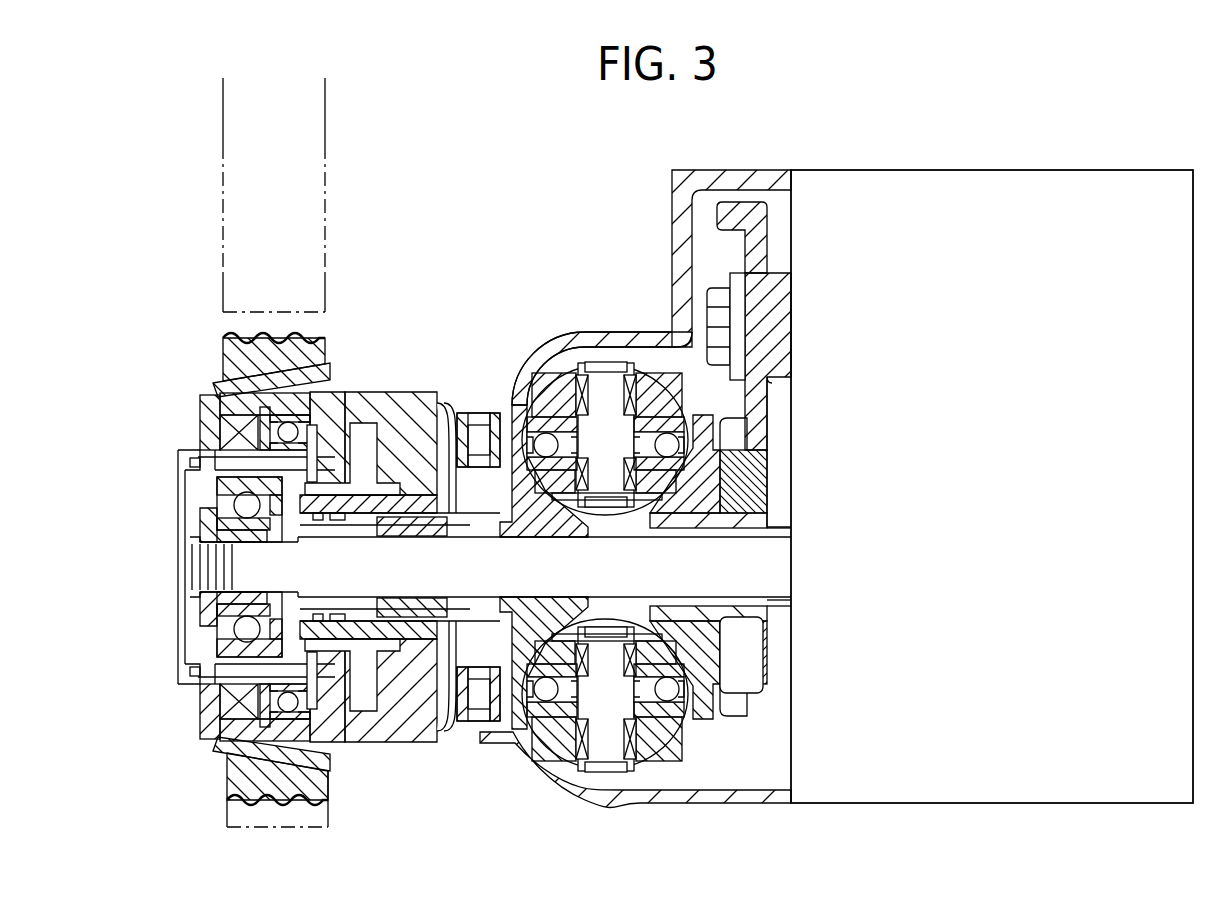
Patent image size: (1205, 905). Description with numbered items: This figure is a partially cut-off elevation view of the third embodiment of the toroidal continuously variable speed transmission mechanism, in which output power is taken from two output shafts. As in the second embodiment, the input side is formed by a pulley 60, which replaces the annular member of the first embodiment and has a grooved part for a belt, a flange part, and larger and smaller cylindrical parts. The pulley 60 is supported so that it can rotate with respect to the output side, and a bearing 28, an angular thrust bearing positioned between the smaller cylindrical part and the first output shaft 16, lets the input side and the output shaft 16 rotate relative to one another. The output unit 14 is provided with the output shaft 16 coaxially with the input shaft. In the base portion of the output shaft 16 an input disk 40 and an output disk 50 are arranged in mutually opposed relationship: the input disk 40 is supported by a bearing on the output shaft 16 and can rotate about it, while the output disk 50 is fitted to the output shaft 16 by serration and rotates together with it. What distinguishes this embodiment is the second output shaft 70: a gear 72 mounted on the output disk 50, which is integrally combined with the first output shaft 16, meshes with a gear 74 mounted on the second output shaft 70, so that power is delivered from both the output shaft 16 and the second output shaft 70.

The output unit 14 is at (1073, 786).
The output shaft 16 is at (720, 575).
The bearing 28 is at (282, 612).
The input disk 40 is at (510, 406).
The output disk 50 is at (703, 414).
The pulley 60 is at (336, 346).
The second output shaft 70 is at (781, 333).
The gear 72 is at (757, 690).
The gear 74 is at (752, 215).